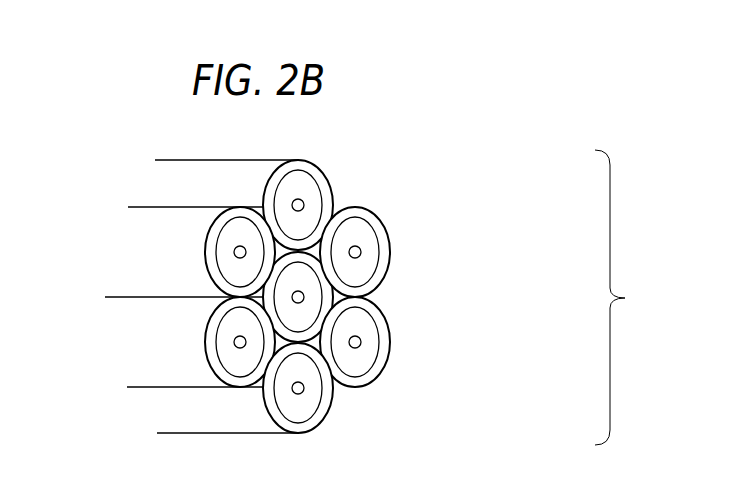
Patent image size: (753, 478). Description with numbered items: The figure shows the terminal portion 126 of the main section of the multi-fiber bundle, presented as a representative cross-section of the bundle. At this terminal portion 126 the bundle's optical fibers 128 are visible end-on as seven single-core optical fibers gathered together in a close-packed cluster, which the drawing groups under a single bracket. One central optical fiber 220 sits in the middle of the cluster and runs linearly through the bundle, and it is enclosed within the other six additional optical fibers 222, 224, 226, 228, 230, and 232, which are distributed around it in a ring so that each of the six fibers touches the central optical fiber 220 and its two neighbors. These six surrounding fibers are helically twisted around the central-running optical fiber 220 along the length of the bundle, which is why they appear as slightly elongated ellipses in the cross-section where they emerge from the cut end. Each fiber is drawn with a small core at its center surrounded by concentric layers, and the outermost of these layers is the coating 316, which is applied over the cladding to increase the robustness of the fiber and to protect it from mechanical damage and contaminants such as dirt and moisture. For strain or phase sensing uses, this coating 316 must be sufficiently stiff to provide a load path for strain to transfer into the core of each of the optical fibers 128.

The terminal portion 126 is at (158, 102).
The optical fibers 128 is at (640, 297).
The central optical fiber 220 is at (309, 295).
The additional optical fiber 222 is at (305, 204).
The additional optical fiber 224 is at (363, 248).
The additional optical fiber 226 is at (363, 340).
The additional optical fiber 228 is at (309, 388).
The additional optical fiber 230 is at (230, 336).
The additional optical fiber 232 is at (227, 240).
The coating 316 is at (293, 168).